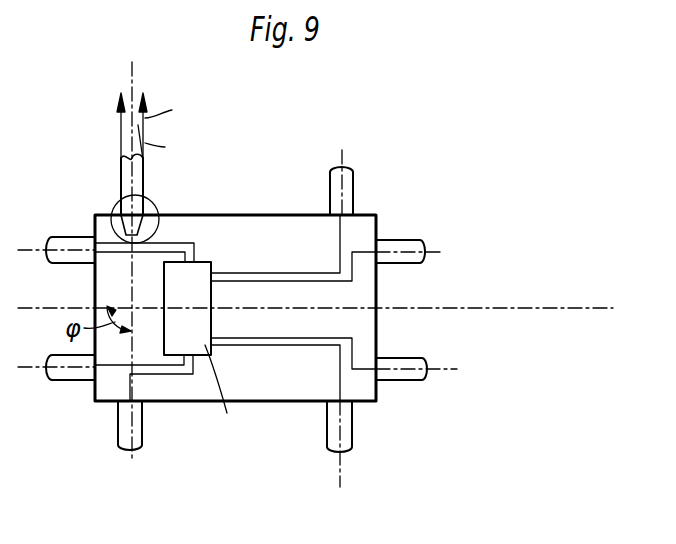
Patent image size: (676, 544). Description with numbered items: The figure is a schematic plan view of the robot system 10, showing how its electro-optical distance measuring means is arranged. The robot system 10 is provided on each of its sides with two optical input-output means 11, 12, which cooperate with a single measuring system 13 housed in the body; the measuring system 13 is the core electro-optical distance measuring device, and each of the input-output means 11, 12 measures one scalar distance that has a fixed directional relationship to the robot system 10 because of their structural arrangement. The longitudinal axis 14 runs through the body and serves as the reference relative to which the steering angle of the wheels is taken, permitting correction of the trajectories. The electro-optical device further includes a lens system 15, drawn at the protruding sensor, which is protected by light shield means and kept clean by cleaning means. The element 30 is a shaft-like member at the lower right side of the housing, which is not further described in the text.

The robot system 10 is at (380, 292).
The optical input-output means 11 is at (375, 172).
The optical input-output means 12 is at (343, 207).
The measuring system 13 is at (200, 303).
The longitudinal axis 14 is at (583, 311).
The lens system 15 is at (157, 203).
The connecting shaft 30 is at (405, 385).